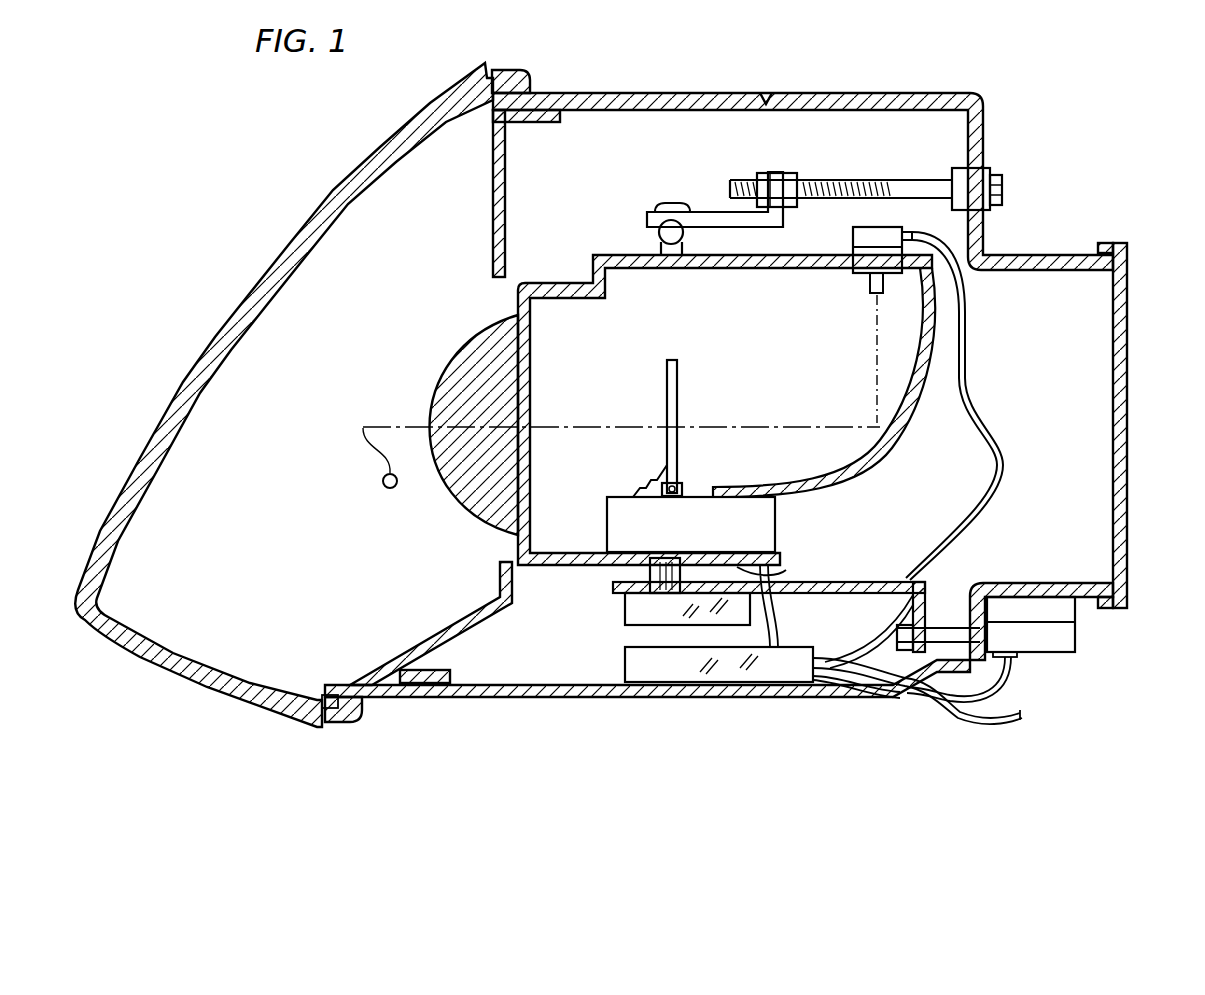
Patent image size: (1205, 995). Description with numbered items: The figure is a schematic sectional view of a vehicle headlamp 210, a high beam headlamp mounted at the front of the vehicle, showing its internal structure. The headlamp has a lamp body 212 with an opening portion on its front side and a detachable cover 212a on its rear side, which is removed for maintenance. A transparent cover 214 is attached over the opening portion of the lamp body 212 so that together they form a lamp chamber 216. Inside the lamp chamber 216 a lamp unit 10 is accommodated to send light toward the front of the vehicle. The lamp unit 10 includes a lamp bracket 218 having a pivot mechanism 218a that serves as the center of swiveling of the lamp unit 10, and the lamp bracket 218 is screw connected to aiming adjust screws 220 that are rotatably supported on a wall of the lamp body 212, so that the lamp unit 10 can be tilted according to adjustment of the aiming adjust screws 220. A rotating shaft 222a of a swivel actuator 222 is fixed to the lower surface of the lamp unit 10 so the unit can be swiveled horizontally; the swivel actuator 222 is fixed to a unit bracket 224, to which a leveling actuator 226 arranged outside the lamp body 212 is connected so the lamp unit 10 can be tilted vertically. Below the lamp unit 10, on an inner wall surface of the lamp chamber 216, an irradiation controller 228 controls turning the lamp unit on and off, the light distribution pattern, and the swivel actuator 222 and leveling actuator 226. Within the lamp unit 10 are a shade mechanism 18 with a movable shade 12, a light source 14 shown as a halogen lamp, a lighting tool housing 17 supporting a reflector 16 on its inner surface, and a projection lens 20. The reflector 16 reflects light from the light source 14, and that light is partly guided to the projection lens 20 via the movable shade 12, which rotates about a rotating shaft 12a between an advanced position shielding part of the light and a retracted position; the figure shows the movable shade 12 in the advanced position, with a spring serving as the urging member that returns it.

The vehicle headlamp 210 is at (866, 90).
The lamp body 212 is at (692, 100).
The detachable cover 212a is at (928, 97).
The transparent cover 214 is at (333, 188).
The lamp chamber 216 is at (441, 236).
The lamp unit 10 is at (566, 280).
The movable shade 12 is at (680, 378).
The rotating shaft 12a is at (673, 495).
The light source 14 is at (860, 276).
The reflector 16 is at (898, 405).
The lighting tool housing 17 is at (912, 382).
The shade mechanism 18 is at (645, 397).
The projection lens 20 is at (470, 340).
The lamp bracket 218 is at (722, 214).
The pivot mechanism 218a is at (659, 228).
The aiming adjust screws 220 is at (910, 186).
The swivel actuator 222 is at (640, 611).
The rotating shaft 222a is at (650, 575).
The unit bracket 224 is at (813, 592).
The leveling actuator 226 is at (1076, 628).
The irradiation controller 228 is at (765, 674).